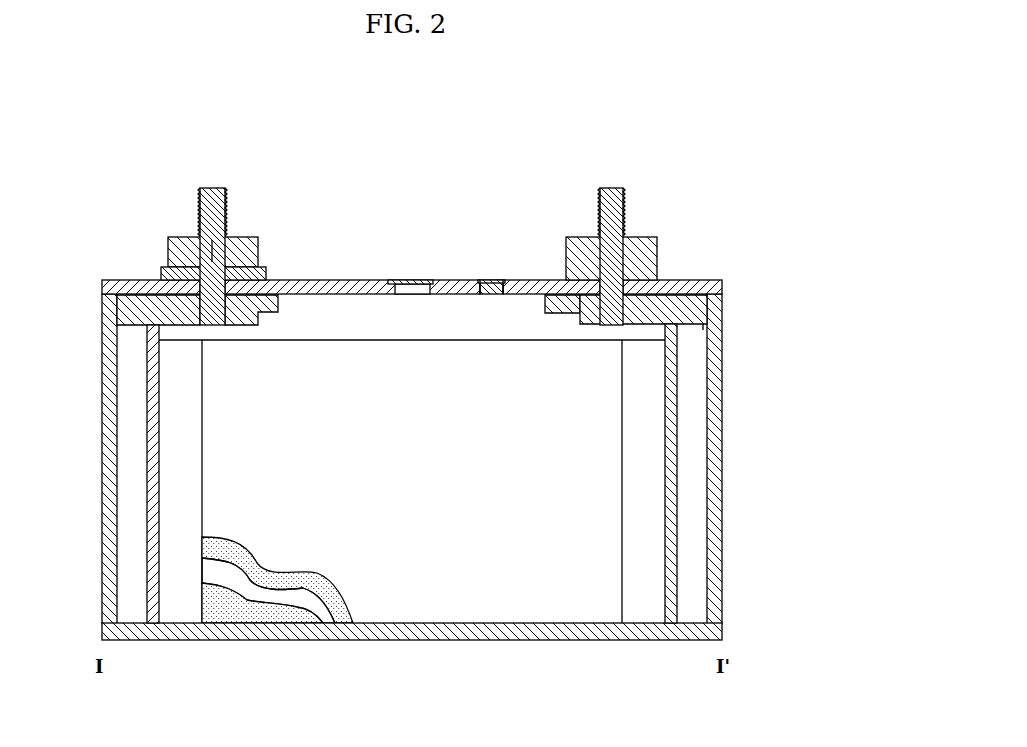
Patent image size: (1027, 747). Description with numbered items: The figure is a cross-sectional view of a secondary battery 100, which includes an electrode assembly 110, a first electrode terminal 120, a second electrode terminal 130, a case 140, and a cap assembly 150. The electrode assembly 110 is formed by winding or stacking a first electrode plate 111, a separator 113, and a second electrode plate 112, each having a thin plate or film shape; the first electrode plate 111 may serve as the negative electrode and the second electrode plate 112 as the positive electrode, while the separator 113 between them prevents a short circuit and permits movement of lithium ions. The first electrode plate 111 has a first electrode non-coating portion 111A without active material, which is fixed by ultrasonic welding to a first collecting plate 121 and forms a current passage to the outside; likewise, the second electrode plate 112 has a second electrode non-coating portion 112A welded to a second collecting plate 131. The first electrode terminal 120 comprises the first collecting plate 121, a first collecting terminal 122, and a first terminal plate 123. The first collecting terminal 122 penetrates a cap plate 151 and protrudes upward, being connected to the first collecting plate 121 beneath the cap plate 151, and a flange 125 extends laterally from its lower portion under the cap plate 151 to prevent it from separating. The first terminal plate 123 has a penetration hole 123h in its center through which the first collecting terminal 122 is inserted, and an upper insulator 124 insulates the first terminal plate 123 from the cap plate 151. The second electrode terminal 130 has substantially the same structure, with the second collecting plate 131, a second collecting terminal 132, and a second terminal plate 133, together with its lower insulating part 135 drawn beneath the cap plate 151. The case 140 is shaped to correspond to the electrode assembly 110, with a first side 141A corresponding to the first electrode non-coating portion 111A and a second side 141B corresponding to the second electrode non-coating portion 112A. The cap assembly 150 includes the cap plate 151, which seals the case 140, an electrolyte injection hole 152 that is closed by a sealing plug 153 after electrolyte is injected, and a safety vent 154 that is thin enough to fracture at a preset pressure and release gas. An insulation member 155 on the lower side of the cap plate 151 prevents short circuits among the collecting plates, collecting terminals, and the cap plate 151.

The secondary battery 100 is at (735, 101).
The electrode assembly 110 is at (385, 697).
The first electrode plate 111 is at (243, 613).
The first electrode non-coating portion 111A is at (175, 540).
The second electrode plate 112 is at (335, 603).
The second electrode non-coating portion 112A is at (648, 458).
The separator 113 is at (309, 607).
The first electrode terminal 120 is at (209, 184).
The first collecting plate 121 is at (147, 435).
The first collecting terminal 122 is at (200, 206).
The first terminal plate 123 is at (168, 245).
The penetration hole 123h is at (218, 235).
The upper insulator 124 is at (160, 272).
The flange 125 is at (147, 312).
The second electrode terminal 130 is at (614, 182).
The second collecting plate 131 is at (675, 382).
The second collecting terminal 132 is at (625, 205).
The second terminal plate 133 is at (657, 260).
The second insulating member 135 is at (693, 303).
The case 140 is at (731, 420).
The first side 141A is at (103, 488).
The second side 141B is at (715, 522).
The cap assembly 150 is at (456, 236).
The cap plate 151 is at (336, 280).
The electrolyte injection hole 152 is at (503, 294).
The sealing plug 153 is at (494, 280).
The safety vent 154 is at (413, 280).
The insulation member 155 is at (707, 328).